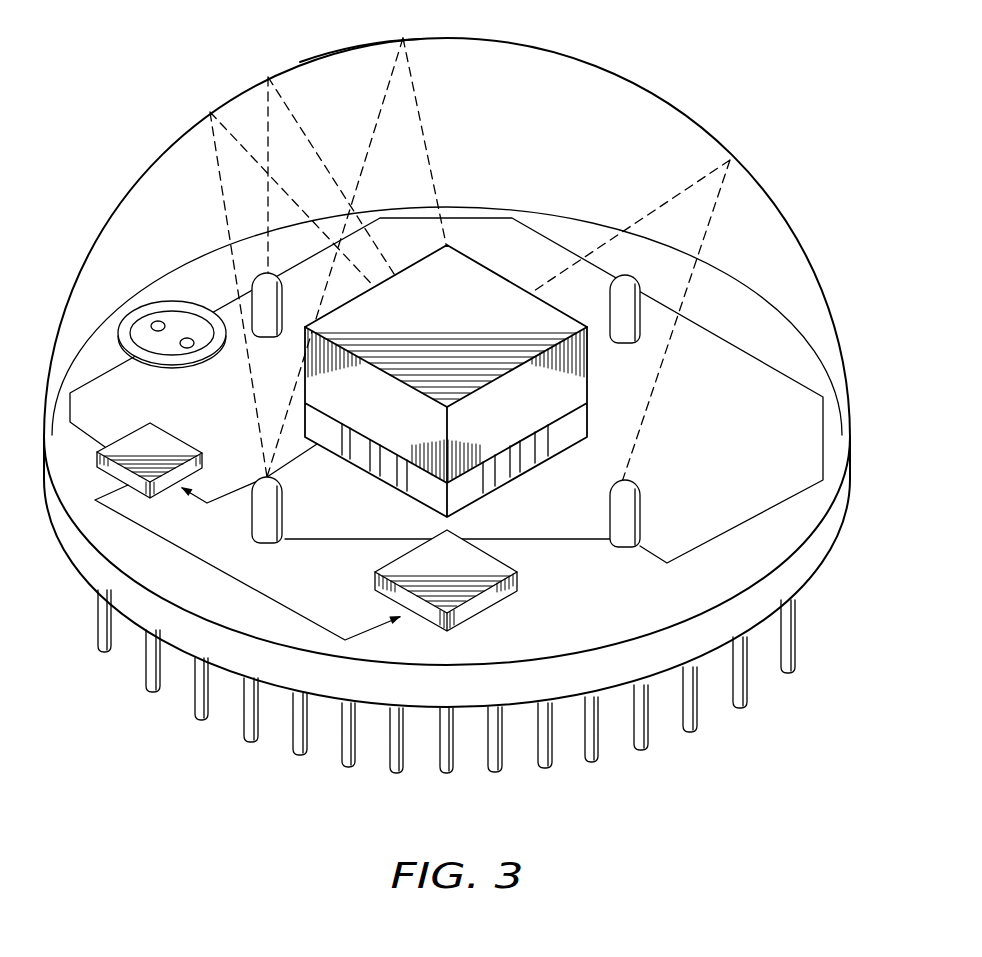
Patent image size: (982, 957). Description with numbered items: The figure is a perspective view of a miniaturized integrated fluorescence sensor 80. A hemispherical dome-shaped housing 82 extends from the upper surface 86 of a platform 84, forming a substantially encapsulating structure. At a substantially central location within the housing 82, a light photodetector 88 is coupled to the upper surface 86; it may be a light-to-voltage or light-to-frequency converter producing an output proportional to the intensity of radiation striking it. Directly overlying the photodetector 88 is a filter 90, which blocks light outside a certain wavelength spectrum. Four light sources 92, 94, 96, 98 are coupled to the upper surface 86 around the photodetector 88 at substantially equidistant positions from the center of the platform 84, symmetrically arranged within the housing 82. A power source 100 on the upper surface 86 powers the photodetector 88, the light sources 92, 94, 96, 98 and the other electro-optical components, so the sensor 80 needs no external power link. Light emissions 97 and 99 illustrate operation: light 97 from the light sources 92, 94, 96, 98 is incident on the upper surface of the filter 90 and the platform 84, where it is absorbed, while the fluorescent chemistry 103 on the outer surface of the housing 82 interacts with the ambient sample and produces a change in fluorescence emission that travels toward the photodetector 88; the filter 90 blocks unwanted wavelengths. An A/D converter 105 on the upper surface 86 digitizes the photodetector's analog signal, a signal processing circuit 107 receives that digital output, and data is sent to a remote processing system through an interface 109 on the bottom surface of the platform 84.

The miniaturized integrated fluorescence sensor 80 is at (186, 52).
The hemispherical dome-shaped housing 82 is at (567, 88).
The platform 84 is at (838, 525).
The upper surface 86 is at (823, 382).
The light photodetector 88 is at (568, 442).
The filter 90 is at (492, 288).
The light source 92 is at (642, 500).
The light source 94 is at (642, 303).
The light source 96 is at (283, 289).
The light emission 97 is at (377, 127).
The light source 98 is at (283, 495).
The light emission 99 is at (418, 107).
The power source 100 is at (187, 320).
The fluorescent chemistry 103 is at (337, 52).
The A/D converter 105 is at (172, 443).
The signal processing circuit 107 is at (494, 567).
The interface 109 is at (103, 653).